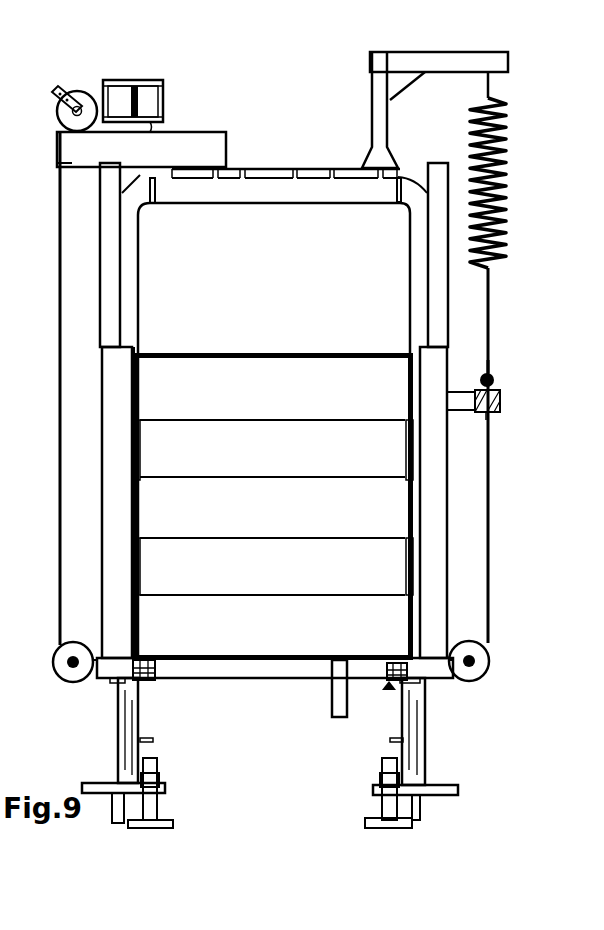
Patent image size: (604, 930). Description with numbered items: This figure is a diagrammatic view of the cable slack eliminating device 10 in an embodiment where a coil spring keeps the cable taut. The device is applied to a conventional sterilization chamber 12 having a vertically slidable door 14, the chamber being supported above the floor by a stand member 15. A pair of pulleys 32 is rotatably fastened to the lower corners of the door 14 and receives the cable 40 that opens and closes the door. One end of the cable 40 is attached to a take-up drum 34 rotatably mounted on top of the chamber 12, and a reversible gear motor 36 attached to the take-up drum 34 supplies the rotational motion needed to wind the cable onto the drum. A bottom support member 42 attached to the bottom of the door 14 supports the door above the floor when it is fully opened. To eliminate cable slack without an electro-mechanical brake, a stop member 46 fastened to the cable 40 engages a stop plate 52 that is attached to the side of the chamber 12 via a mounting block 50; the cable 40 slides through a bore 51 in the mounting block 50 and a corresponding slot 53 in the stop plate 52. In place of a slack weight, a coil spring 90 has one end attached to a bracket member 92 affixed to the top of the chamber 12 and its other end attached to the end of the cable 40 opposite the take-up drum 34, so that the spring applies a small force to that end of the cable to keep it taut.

The cable slack eliminating device 10 is at (522, 412).
The sterilization chamber 12 is at (294, 160).
The door 14 is at (253, 461).
The stand member 15 is at (127, 722).
The pulleys 32 is at (64, 668).
The take-up drum 34 is at (87, 100).
The reversible gear motor 36 is at (126, 92).
The cable 40 is at (488, 526).
The bottom support member 42 is at (338, 715).
The stop member 46 is at (501, 351).
The mounting block 50 is at (490, 410).
The bore 51 is at (488, 412).
The stop plate 52 is at (500, 400).
The slot 53 is at (497, 392).
The coil spring 90 is at (502, 176).
The bracket member 92 is at (467, 52).